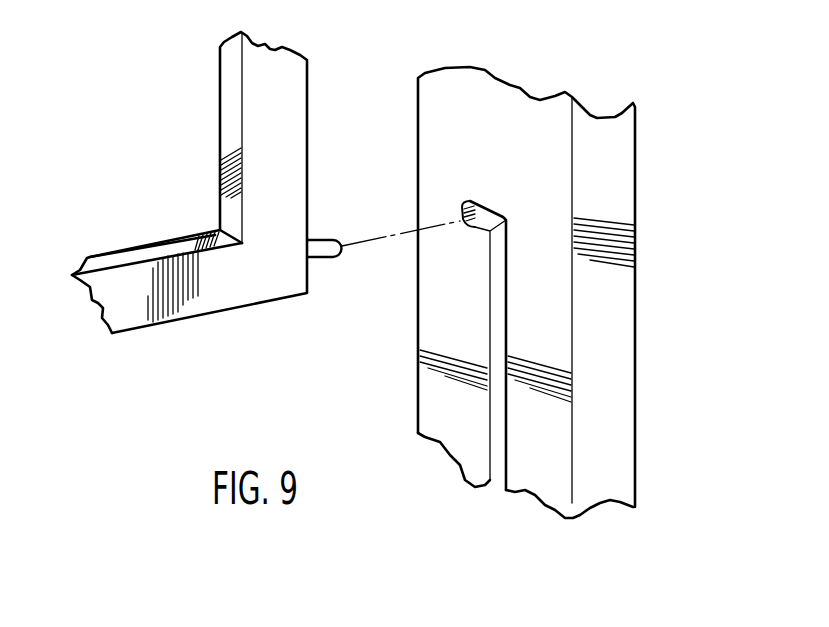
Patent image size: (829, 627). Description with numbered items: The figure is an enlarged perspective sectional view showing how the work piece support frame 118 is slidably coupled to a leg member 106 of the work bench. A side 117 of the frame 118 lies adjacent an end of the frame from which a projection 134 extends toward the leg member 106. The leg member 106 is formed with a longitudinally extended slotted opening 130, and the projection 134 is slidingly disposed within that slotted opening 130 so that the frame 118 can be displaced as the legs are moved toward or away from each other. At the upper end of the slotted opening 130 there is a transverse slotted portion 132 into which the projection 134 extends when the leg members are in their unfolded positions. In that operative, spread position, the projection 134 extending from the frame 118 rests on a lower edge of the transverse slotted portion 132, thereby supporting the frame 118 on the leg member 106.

The leg member 106 is at (605, 190).
The side of frame 117 is at (208, 288).
The work piece support frame 118 is at (133, 278).
The longitudinally extended slotted opening 130 is at (498, 397).
The transverse slotted portion 132 is at (476, 226).
The projection 134 is at (318, 252).